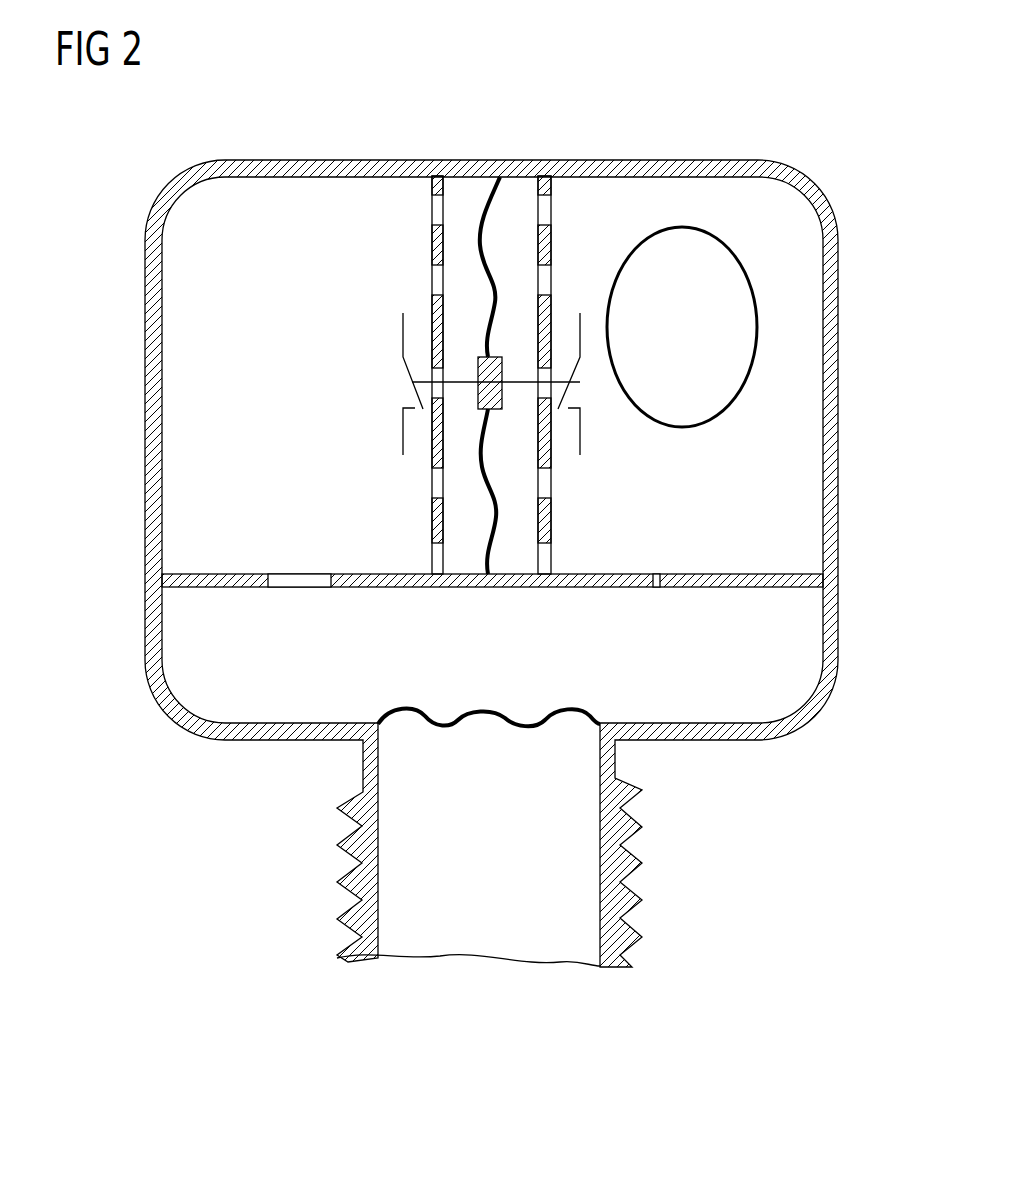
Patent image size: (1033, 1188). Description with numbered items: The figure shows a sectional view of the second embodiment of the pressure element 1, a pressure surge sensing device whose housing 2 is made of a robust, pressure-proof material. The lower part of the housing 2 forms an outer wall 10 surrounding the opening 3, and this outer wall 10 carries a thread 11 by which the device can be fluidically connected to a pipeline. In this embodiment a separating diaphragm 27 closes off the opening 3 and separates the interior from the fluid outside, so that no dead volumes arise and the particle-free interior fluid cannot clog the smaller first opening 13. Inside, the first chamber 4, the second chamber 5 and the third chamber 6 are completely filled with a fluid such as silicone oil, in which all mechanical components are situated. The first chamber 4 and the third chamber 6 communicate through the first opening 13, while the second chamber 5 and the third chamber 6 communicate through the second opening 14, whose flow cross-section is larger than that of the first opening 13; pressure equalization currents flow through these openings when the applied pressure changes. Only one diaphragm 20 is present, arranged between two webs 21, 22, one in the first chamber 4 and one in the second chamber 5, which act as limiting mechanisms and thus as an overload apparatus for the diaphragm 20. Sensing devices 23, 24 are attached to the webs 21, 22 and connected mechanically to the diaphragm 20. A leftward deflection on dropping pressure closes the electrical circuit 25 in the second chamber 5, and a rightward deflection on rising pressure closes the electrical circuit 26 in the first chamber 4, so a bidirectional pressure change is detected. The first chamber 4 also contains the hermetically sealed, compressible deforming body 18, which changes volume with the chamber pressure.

The pressure element 1 is at (729, 91).
The housing 2 is at (293, 168).
The opening 3 is at (507, 934).
The first chamber 4 is at (629, 198).
The second chamber 5 is at (339, 195).
The third chamber 6 is at (262, 707).
The outer wall 10 is at (678, 872).
The thread 11 is at (343, 878).
The first opening 13 is at (660, 597).
The second opening 14 is at (301, 597).
The deforming body 18 is at (705, 428).
The diaphragm 20 is at (487, 198).
The web 21 is at (552, 246).
The web 22 is at (431, 250).
The sensing device 23 is at (582, 334).
The sensing device 24 is at (401, 333).
The electrical circuit 25 is at (412, 382).
The electrical circuit 26 is at (580, 380).
The separating diaphragm 27 is at (452, 729).